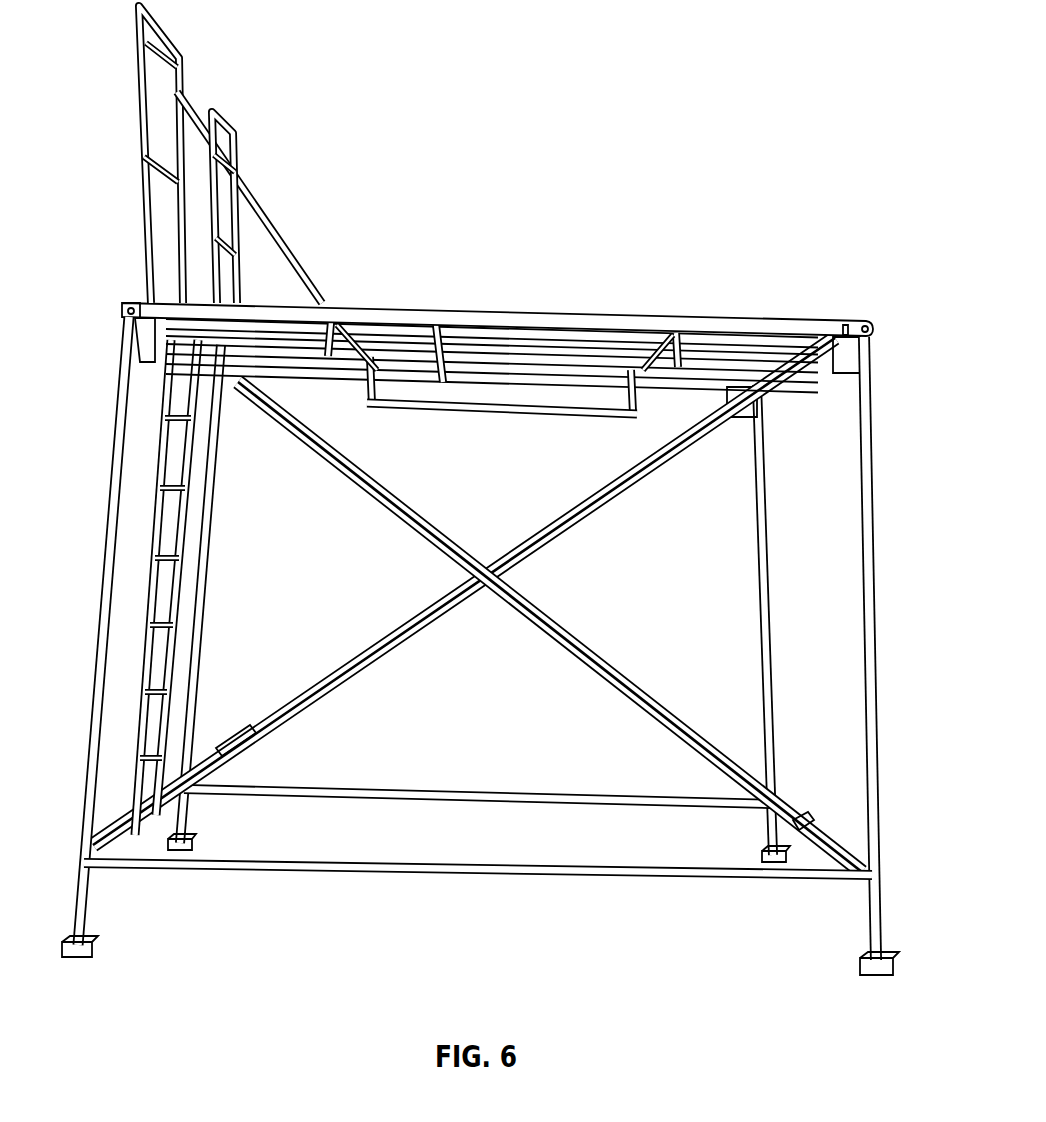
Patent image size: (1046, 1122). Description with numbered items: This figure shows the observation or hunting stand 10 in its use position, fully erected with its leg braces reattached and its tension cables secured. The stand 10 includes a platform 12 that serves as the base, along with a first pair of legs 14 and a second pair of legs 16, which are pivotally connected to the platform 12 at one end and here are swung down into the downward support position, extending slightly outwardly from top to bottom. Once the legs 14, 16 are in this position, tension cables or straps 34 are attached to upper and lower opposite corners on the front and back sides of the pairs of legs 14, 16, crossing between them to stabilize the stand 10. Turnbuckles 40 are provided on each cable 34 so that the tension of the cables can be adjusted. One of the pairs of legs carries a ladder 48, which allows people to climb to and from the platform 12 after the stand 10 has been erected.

The observation or hunting stand 10 is at (893, 381).
The platform 12 is at (730, 317).
The first pair of legs 14 is at (118, 478).
The second pair of legs 16 is at (867, 470).
The tension cables or straps 34 is at (413, 507).
The turnbuckles 40 is at (217, 750).
The ladder 48 is at (160, 528).